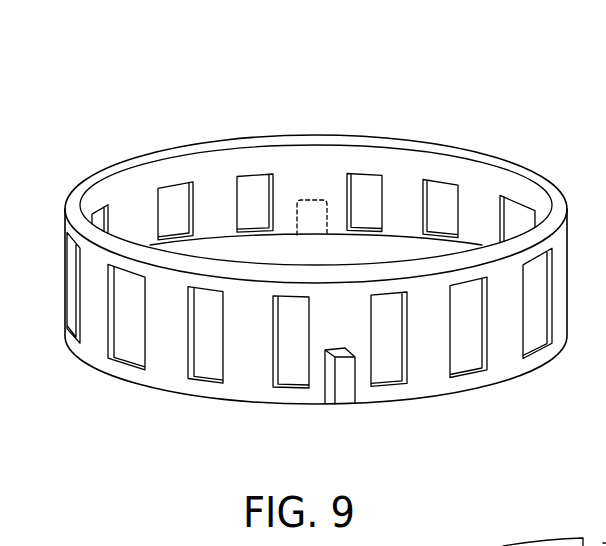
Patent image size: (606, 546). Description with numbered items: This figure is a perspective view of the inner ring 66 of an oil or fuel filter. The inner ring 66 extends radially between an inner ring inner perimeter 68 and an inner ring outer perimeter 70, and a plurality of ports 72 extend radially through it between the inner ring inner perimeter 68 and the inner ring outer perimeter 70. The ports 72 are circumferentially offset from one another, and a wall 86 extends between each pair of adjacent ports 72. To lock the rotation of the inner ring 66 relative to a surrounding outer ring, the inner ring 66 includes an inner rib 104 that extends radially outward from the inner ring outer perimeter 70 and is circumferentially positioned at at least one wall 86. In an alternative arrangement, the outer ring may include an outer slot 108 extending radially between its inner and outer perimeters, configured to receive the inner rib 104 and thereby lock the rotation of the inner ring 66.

The inner ring 66 is at (323, 269).
The inner ring inner perimeter 68 is at (397, 137).
The inner ring outer perimeter 70 is at (417, 270).
The ports 72 is at (208, 367).
The wall 86 is at (328, 330).
The inner rib 104 is at (309, 197).
The outer slot 108 is at (597, 545).